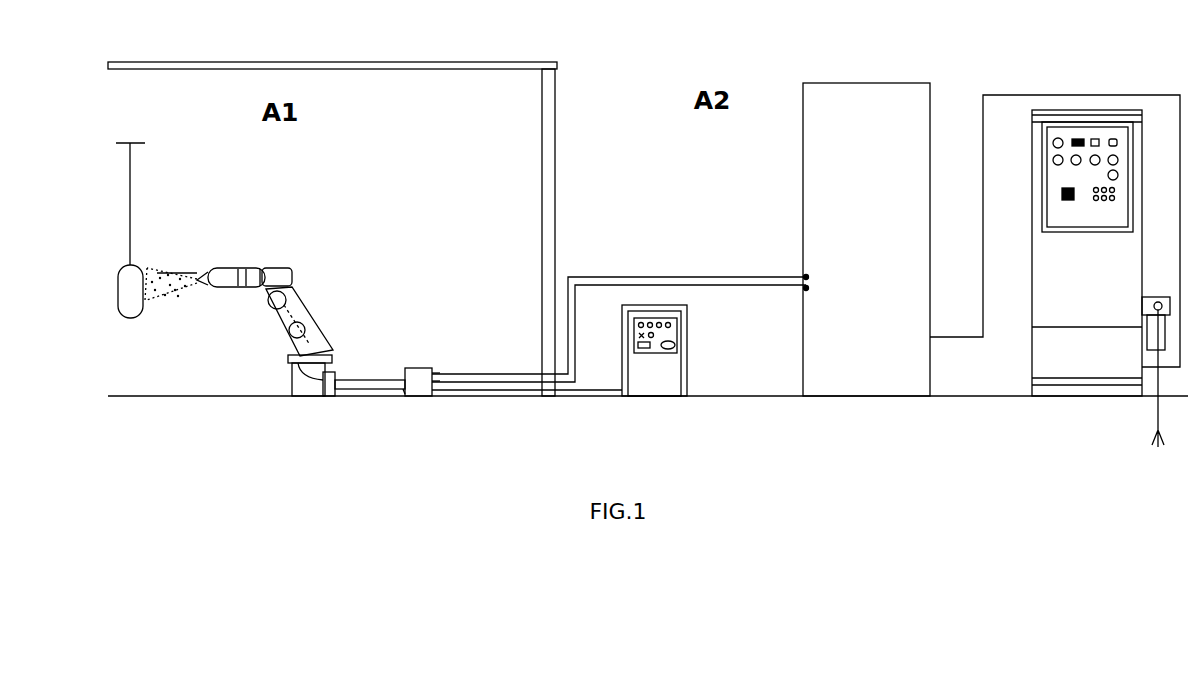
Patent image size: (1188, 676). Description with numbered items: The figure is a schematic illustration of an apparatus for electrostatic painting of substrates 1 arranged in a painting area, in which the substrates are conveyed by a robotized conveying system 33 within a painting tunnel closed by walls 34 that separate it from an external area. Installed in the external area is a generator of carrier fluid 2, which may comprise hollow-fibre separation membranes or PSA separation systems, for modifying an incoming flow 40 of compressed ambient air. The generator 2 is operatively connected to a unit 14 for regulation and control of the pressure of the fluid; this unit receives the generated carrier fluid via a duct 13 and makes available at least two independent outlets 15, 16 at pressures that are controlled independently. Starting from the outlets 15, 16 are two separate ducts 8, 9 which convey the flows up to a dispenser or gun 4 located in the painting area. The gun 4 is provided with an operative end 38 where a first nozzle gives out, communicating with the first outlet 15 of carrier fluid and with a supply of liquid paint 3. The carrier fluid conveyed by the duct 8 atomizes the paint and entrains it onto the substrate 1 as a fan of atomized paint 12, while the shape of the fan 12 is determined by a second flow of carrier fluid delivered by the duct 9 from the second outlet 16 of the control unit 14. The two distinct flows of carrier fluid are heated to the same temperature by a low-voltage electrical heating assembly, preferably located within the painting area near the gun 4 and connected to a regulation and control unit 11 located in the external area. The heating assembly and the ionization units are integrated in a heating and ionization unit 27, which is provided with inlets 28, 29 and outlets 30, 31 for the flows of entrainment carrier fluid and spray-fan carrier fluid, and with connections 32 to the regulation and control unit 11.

The substrate 1 is at (130, 306).
The generator of carrier fluid 2 is at (1087, 253).
The supply of liquid paint 3 is at (240, 288).
The dispenser or gun 4 is at (252, 270).
The duct 8 is at (362, 378).
The duct 9 is at (382, 380).
The regulation and control unit 11 is at (655, 384).
The fan of atomized paint 12 is at (170, 290).
The duct 13 is at (947, 340).
The unit for regulation and control of the pressure 14 is at (866, 239).
The first outlet 15 is at (806, 288).
The second outlet 16 is at (806, 277).
The heating and ionization unit 27 is at (418, 396).
The inlet 28 is at (434, 380).
The inlet 29 is at (432, 369).
The outlet 30 is at (396, 382).
The outlet 31 is at (403, 394).
The connections 32 is at (433, 398).
The robotized conveying system 33 is at (133, 166).
The walls 34 is at (542, 158).
The operative end 38 is at (202, 268).
The incoming flow of compressed ambient air 40 is at (1157, 408).